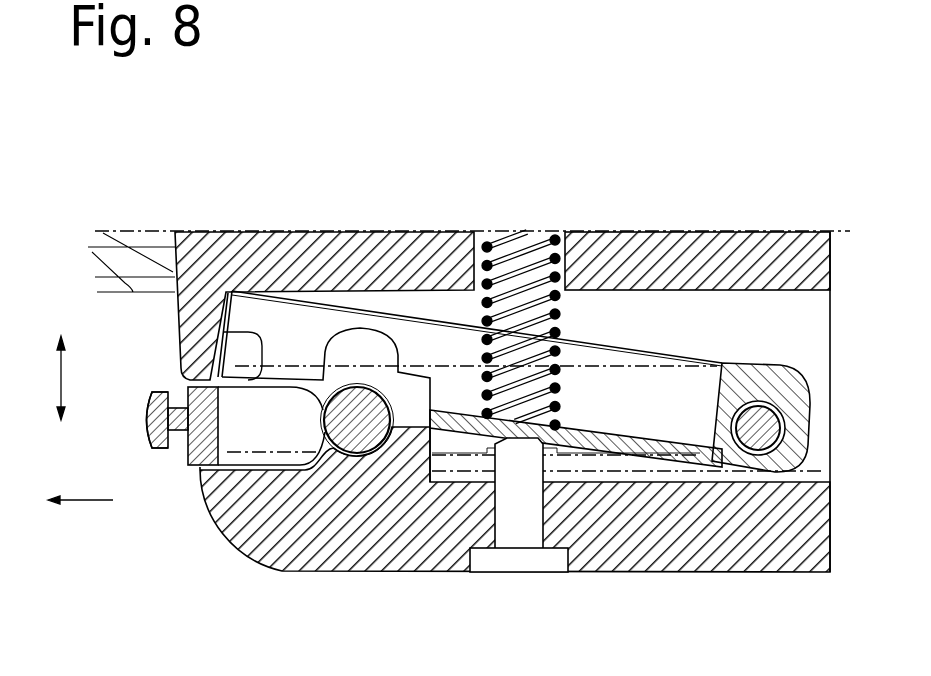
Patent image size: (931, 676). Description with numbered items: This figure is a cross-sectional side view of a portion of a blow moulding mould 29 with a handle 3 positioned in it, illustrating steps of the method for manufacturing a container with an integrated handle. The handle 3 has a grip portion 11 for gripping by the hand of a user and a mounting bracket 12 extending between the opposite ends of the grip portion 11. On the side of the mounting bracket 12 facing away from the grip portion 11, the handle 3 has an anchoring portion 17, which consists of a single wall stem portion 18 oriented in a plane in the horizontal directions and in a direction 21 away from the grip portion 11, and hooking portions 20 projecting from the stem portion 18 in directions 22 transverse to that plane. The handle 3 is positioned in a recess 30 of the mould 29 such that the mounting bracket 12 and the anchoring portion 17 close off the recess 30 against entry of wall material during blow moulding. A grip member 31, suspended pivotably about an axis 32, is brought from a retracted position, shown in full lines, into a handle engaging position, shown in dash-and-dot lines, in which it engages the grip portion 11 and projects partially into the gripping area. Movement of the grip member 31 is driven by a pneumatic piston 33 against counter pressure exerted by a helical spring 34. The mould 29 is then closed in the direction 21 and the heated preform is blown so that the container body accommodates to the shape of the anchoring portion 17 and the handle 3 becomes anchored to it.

The handle 3 is at (144, 447).
The grip portion 11 is at (323, 420).
The mounting bracket 12 is at (271, 426).
The anchoring portion 17 is at (178, 431).
The stem portion 18 is at (195, 467).
The hooking portions 20 is at (152, 390).
The direction away from the grip portion 21 is at (80, 500).
The transverse directions 22 is at (61, 378).
The blow moulding mould 29 is at (127, 226).
The recess 30 is at (237, 333).
The grip member 31 is at (646, 359).
The axis 32 is at (797, 432).
The pneumatic piston 33 is at (522, 552).
The helical spring 34 is at (557, 312).